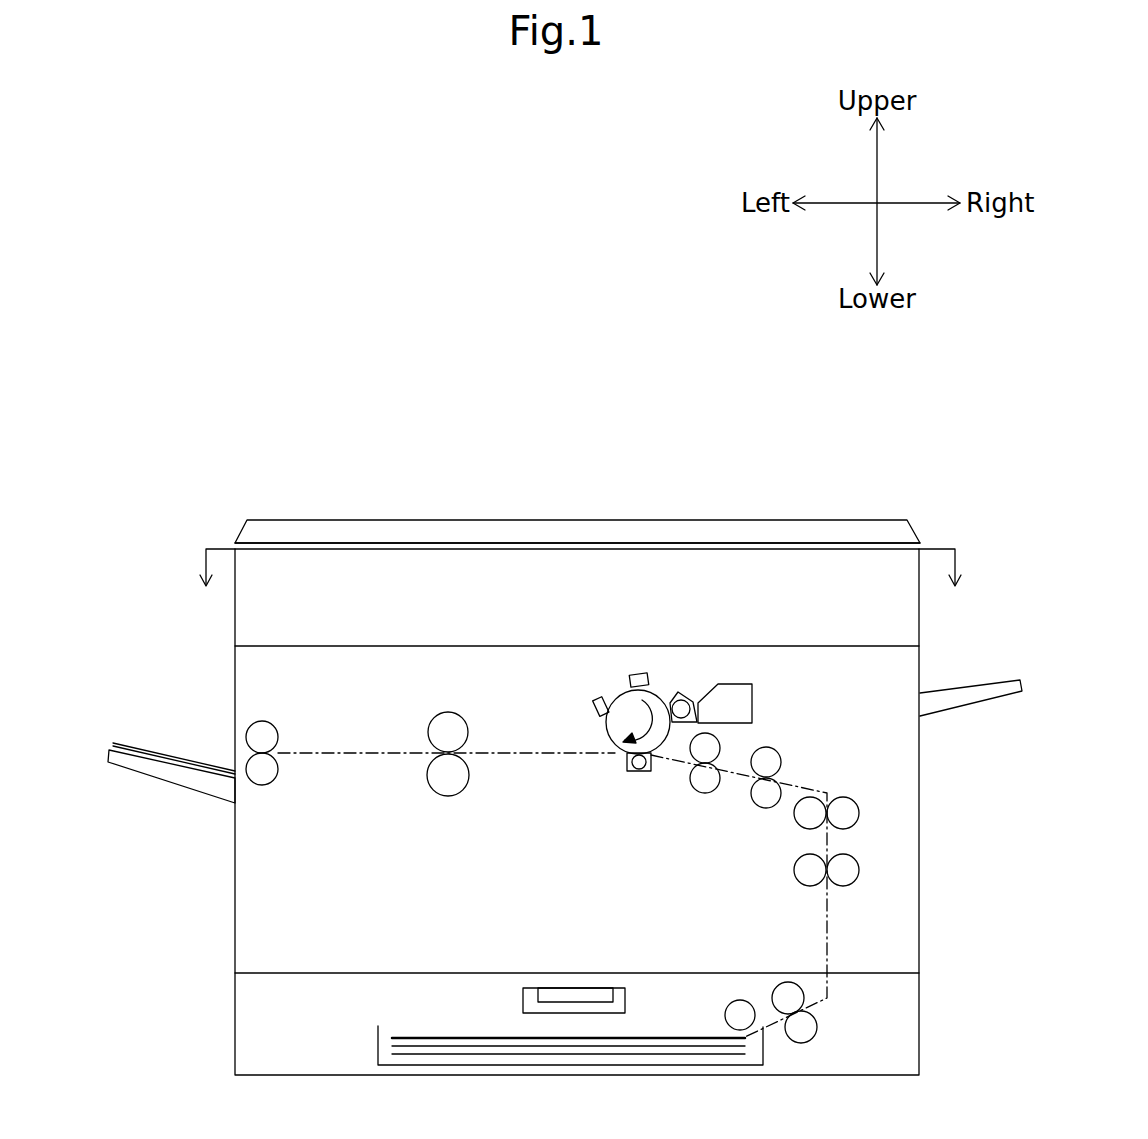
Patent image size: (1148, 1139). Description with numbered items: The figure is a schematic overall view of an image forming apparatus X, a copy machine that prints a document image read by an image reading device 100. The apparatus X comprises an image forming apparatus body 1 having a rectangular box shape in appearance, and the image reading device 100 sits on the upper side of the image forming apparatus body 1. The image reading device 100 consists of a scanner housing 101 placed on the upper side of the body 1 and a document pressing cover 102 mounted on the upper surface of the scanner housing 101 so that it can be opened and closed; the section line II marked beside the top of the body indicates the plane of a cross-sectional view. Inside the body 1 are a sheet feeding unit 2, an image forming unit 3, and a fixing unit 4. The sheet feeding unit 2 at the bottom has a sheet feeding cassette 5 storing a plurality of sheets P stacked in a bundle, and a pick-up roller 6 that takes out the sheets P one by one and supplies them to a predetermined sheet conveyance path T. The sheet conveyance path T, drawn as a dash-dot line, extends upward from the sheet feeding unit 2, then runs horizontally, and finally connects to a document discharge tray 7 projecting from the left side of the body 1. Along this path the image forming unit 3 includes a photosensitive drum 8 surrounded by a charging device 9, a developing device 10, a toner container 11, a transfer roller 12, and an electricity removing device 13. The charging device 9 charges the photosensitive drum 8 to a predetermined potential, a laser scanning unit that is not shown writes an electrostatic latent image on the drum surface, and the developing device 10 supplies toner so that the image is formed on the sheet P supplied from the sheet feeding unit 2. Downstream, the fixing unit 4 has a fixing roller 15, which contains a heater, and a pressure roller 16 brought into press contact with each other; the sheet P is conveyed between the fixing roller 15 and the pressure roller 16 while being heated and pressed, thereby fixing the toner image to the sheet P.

The image forming apparatus X is at (250, 478).
The image forming apparatus body 1 is at (920, 806).
The sheet feeding unit 2 is at (445, 1010).
The image forming unit 3 is at (680, 764).
The fixing unit 4 is at (357, 743).
The sheet feeding cassette 5 is at (765, 1050).
The pick-up roller 6 is at (740, 1001).
The document discharge tray 7 is at (200, 795).
The photosensitive drum 8 is at (612, 744).
The charging device 9 is at (630, 680).
The developing device 10 is at (690, 699).
The toner container 11 is at (753, 703).
The transfer roller 12 is at (646, 793).
The electricity removing device 13 is at (593, 700).
The fixing roller 15 is at (448, 712).
The pressure roller 16 is at (432, 787).
The image reading device 100 is at (762, 520).
The scanner housing 101 is at (920, 622).
The document pressing cover 102 is at (883, 535).
The section line II is at (580, 549).
The sheet conveyance path T is at (800, 787).
The sheet P is at (500, 1037).